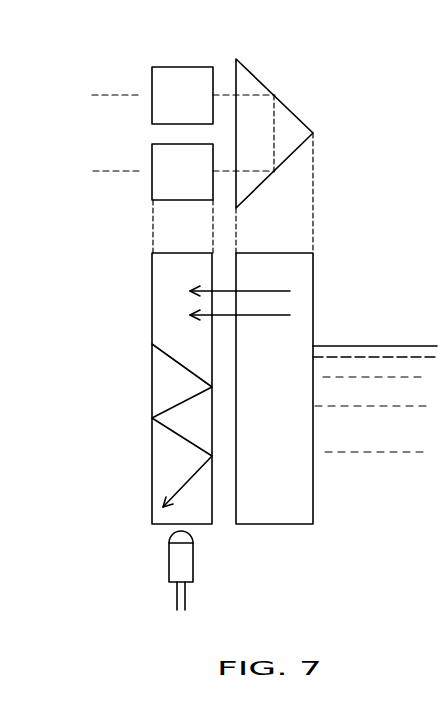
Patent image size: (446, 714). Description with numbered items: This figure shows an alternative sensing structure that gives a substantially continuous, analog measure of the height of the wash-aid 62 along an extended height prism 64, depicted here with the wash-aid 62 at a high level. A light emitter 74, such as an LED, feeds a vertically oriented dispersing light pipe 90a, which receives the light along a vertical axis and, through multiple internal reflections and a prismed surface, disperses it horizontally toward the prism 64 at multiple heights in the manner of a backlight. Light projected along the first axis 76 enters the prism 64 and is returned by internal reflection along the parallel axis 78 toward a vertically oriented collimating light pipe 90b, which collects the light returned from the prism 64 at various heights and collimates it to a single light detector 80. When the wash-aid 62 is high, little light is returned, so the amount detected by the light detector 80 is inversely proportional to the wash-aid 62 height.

The dispersing light pipe 90a is at (158, 65).
The collimating light pipe 90b is at (152, 146).
The prism 64 is at (287, 128).
The wash-aid 62 is at (376, 345).
The first axis 76 is at (117, 97).
The axis 78 is at (120, 172).
The light emitter 74 is at (157, 537).
The light detector 80 is at (195, 565).